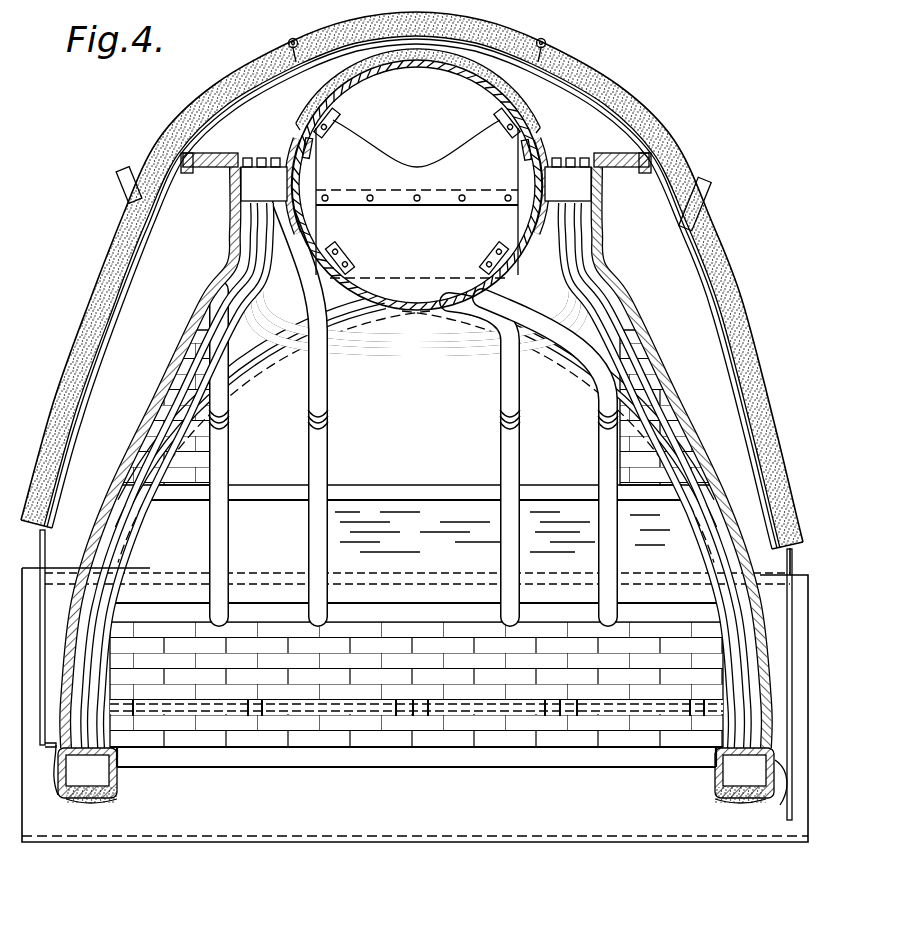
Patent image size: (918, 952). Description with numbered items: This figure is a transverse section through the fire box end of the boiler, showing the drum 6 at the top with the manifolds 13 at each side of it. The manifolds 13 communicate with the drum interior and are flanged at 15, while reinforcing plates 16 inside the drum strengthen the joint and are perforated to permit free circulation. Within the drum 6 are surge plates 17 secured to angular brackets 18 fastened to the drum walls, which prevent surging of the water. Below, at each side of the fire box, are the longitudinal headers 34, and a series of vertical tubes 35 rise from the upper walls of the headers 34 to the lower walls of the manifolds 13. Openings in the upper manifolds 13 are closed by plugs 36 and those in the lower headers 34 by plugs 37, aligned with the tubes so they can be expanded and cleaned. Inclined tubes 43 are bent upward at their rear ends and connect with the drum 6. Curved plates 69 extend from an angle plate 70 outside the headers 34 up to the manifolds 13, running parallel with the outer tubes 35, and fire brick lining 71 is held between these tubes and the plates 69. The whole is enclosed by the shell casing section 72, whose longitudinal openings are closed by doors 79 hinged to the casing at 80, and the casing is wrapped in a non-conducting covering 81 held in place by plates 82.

The drum 6 is at (472, 75).
The manifolds 13 is at (416, 177).
The flange 15 is at (294, 142).
The reinforcing plates 16 is at (312, 151).
The surge plates 17 is at (428, 275).
The angular brackets 18 is at (332, 112).
The longitudinal headers 34 is at (116, 772).
The vertical tubes 35 is at (230, 272).
The plugs 36 is at (274, 157).
The plugs 37 is at (82, 811).
The inclined tubes 43 is at (238, 410).
The plates 69 is at (168, 340).
The angle plate 70 is at (52, 795).
The fire brick lining 71 is at (142, 382).
The casing section 72 is at (266, 74).
The doors 79 is at (167, 142).
The hinge 80 is at (292, 38).
The non-conducting covering 81 is at (237, 78).
The plates 82 is at (95, 298).